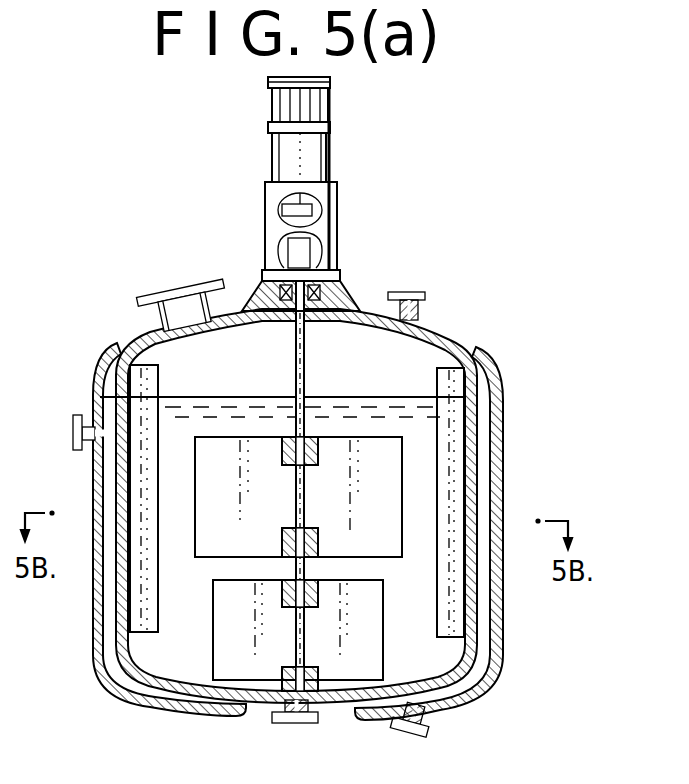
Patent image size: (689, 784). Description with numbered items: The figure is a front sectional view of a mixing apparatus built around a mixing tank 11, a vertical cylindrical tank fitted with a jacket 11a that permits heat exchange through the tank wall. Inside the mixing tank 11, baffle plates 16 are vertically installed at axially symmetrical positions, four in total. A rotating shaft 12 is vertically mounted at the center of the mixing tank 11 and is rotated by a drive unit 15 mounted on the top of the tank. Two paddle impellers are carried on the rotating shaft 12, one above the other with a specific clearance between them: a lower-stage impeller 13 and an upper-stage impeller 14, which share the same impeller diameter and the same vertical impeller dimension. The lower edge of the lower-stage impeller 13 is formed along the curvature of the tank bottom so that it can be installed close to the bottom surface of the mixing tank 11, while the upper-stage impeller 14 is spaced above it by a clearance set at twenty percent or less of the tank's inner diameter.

The mixing tank 11 is at (125, 343).
The jacket 11a is at (100, 398).
The rotating shaft 12 is at (296, 351).
The lower-stage impeller 13 is at (238, 637).
The upper-stage impeller 14 is at (213, 536).
The drive unit 15 is at (332, 97).
The baffle plates 16 is at (97, 398).